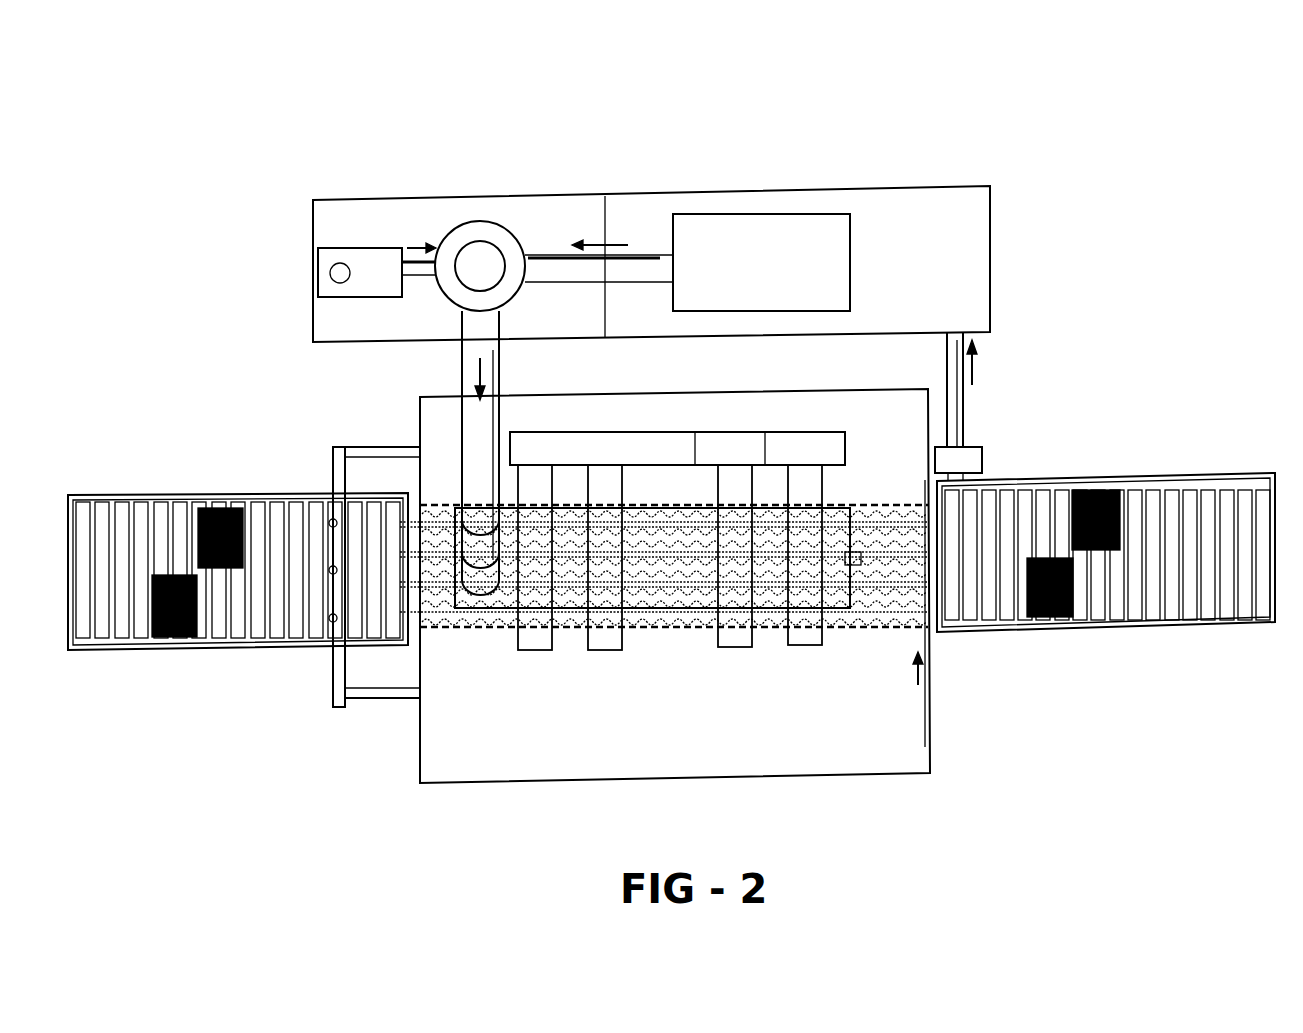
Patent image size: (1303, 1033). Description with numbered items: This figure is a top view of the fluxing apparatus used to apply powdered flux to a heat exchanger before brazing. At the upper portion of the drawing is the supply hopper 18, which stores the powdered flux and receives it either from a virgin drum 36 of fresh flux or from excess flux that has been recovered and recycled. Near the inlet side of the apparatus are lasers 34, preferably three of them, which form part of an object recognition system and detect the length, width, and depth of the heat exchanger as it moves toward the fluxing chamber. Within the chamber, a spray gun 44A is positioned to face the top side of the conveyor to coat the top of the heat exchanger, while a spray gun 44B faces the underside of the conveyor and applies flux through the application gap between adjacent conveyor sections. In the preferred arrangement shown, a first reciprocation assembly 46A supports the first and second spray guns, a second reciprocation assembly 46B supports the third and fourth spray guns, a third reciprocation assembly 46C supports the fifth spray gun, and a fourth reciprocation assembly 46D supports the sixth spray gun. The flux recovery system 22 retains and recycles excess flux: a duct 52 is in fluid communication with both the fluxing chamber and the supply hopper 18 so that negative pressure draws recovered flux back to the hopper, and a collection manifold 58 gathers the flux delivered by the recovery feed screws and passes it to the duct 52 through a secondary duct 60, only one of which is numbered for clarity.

The flux recovery system 22 is at (908, 162).
The supply hopper 18 is at (480, 222).
The virgin drum 36 is at (338, 270).
The laser 34 is at (332, 520).
The spray gun 44A is at (630, 532).
The spray gun 44B is at (570, 535).
The first reciprocation assembly 46A is at (530, 652).
The second reciprocation assembly 46B is at (612, 652).
The third reciprocation assembly 46C is at (735, 648).
The fourth reciprocation assembly 46D is at (808, 645).
The duct 52 is at (963, 412).
The collection manifold 58 is at (972, 460).
The secondary duct 60 is at (952, 605).